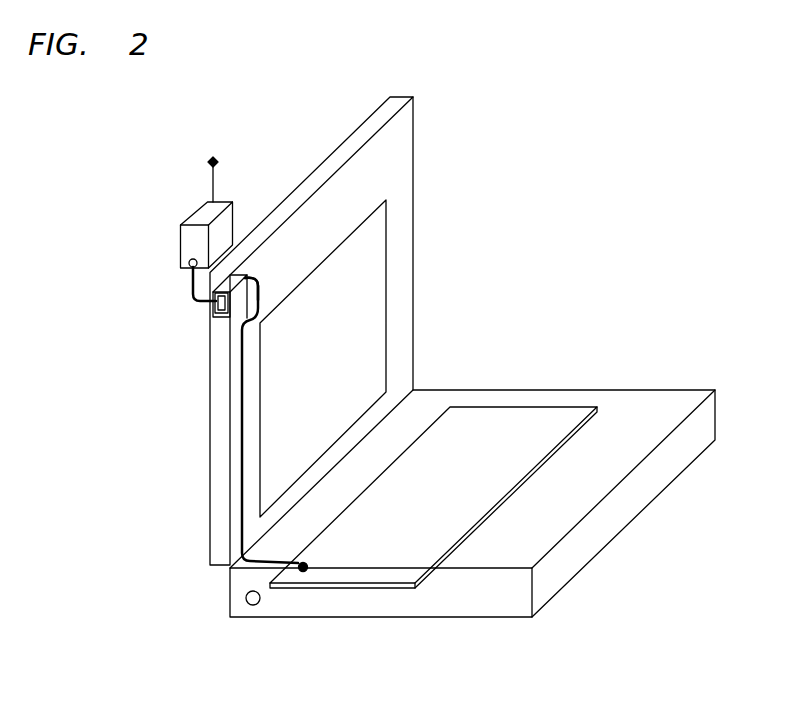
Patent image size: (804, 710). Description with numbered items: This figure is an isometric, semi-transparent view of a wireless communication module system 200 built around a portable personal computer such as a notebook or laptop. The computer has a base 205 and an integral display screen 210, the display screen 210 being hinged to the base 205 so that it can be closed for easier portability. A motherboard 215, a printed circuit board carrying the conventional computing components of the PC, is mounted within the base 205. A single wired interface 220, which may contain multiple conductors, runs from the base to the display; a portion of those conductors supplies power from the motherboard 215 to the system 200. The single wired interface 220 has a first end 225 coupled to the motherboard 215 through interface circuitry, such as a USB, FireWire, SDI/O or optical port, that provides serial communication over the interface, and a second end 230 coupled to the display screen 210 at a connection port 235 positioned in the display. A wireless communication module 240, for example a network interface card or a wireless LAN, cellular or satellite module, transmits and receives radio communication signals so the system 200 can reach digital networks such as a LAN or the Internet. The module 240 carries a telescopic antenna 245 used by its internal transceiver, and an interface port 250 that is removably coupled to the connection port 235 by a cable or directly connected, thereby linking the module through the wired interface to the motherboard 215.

The wireless communication module system 200 is at (622, 121).
The base 205 is at (455, 618).
The display screen 210 is at (211, 566).
The motherboard 215 is at (548, 404).
The single wired interface 220 is at (241, 413).
The first end 225 is at (306, 563).
The second end 230 is at (262, 282).
The connection port 235 is at (212, 322).
The wireless communication module 240 is at (181, 233).
The antenna 245 is at (209, 162).
The interface port 250 is at (189, 263).